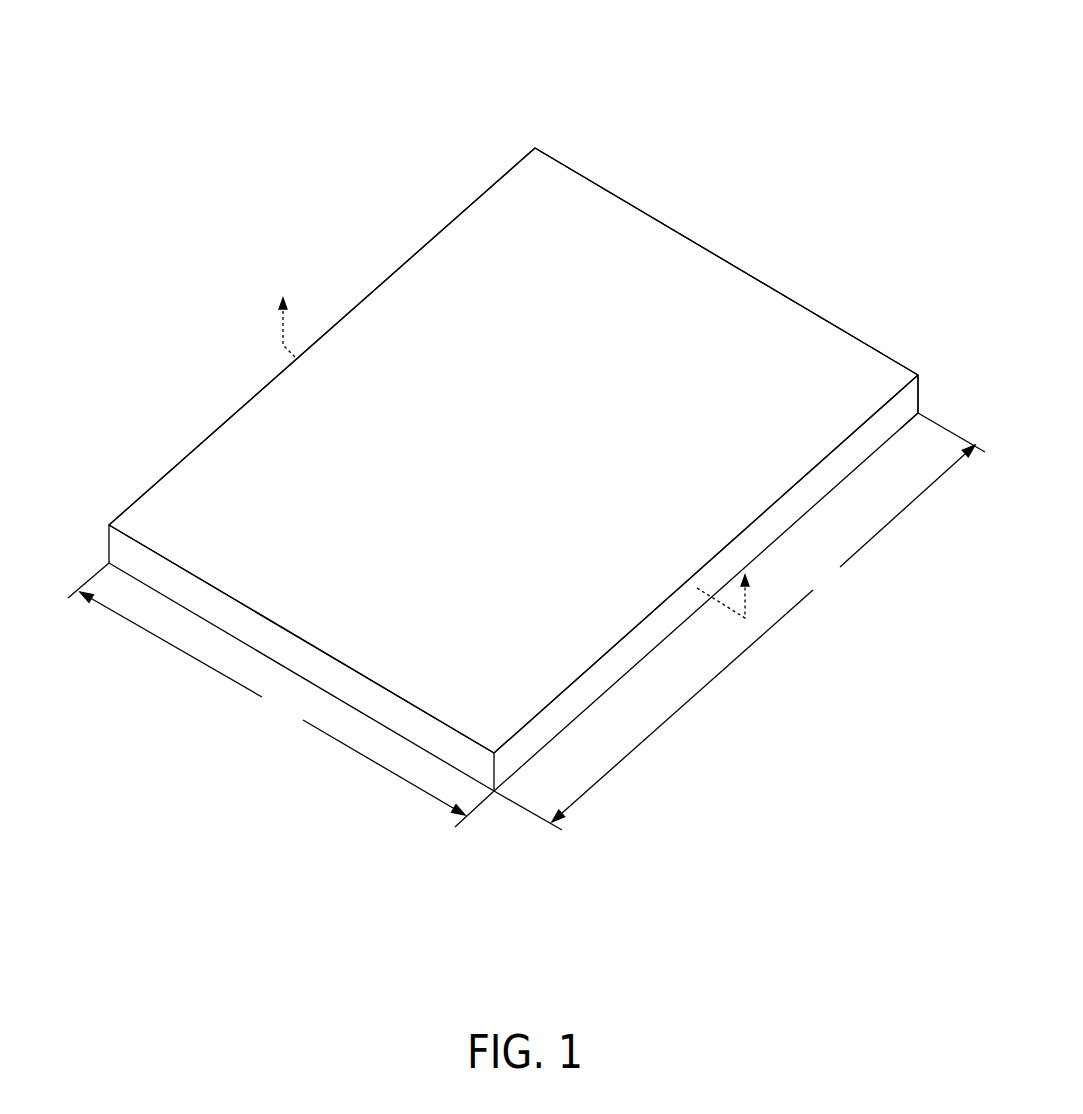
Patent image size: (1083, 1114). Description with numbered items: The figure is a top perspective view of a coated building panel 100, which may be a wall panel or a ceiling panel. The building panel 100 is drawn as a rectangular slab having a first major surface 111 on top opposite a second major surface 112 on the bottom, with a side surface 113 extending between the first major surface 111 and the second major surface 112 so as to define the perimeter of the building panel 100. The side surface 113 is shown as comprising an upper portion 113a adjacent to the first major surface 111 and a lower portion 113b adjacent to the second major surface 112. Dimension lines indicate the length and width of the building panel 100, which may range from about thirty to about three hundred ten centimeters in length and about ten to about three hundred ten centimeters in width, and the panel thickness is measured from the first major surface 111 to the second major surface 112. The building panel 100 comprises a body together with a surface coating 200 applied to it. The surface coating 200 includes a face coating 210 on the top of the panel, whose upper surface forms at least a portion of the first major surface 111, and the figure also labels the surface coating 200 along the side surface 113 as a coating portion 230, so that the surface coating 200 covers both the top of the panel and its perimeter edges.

The coated building panel 100 is at (526, 424).
The first major surface 111 is at (397, 312).
The second major surface 112 is at (563, 730).
The side surface 113 is at (825, 472).
The upper portion 113a is at (879, 417).
The lower portion 113b is at (892, 430).
The surface coating 200 is at (513, 401).
The face coating 210 is at (582, 257).
The edge coating 230 is at (238, 625).